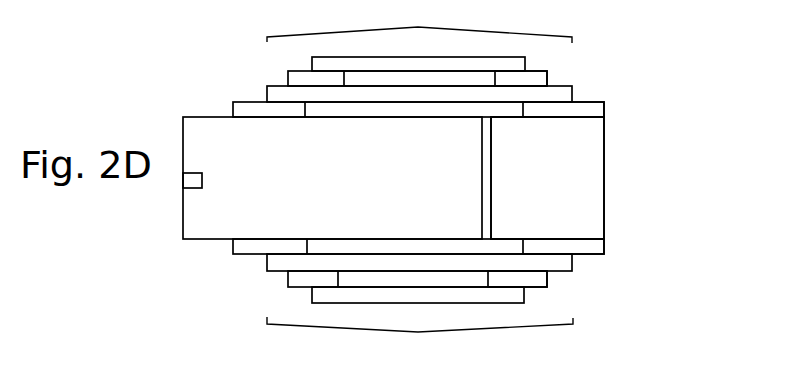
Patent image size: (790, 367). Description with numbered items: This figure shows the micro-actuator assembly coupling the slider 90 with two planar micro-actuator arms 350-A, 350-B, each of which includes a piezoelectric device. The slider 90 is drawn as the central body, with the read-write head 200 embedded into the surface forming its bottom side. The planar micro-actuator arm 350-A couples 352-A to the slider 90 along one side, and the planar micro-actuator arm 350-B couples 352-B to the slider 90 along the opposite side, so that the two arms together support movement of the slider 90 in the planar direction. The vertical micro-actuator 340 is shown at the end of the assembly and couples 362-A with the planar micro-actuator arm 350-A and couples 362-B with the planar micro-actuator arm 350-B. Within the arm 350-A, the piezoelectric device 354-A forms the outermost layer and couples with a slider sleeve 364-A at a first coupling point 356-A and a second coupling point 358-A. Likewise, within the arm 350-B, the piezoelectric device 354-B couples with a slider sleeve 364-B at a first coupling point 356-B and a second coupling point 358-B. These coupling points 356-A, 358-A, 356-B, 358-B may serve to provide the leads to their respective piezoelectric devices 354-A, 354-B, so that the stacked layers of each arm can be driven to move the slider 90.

The slider 90 is at (404, 159).
The read-write head 200 is at (202, 182).
The vertical micro-actuator 340 is at (604, 168).
The planar micro-actuator arm 350-A is at (419, 21).
The planar micro-actuator arm 350-B is at (420, 338).
The coupling 352-A is at (233, 108).
The coupling 352-B is at (233, 247).
The piezoelectric device 354-A is at (525, 61).
The piezoelectric device 354-B is at (510, 305).
The first coupling point 356-A is at (288, 80).
The first coupling point 356-B is at (288, 279).
The second coupling point 358-A is at (547, 80).
The second coupling point 358-B is at (548, 278).
The coupling 362-A is at (604, 112).
The coupling 362-B is at (604, 250).
The slider sleeve 364-A is at (267, 94).
The slider sleeve 364-B is at (267, 263).